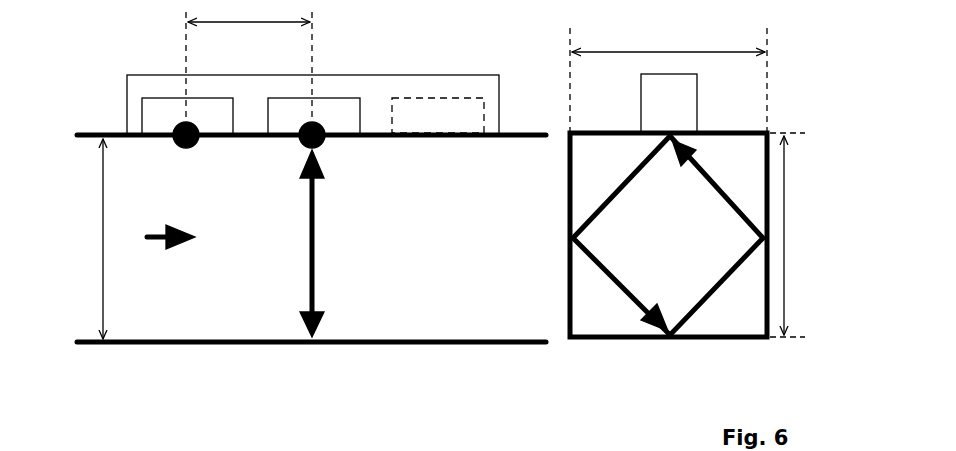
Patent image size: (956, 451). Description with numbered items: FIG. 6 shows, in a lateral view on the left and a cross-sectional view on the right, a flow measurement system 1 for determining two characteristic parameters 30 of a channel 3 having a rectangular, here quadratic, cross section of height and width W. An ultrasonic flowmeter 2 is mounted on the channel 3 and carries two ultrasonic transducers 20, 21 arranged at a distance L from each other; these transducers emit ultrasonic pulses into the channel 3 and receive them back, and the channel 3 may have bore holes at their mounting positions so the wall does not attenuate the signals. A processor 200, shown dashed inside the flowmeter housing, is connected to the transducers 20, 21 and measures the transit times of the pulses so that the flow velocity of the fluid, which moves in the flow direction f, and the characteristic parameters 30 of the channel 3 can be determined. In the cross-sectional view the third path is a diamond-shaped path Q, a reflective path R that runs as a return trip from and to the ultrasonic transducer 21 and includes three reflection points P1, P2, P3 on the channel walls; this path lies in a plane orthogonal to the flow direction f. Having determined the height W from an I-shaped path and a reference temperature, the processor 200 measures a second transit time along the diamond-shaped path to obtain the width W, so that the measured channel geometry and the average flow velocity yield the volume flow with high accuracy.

The flow measurement system 1 is at (88, 57).
The ultrasonic flowmeter 2 is at (127, 104).
The channel 3 is at (202, 346).
The ultrasonic transducer 20 is at (155, 98).
The ultrasonic transducer 21 is at (296, 98).
The processor 200 is at (437, 95).
The characteristic parameter 30 is at (103, 238).
The distance L is at (249, 11).
The flow direction f is at (152, 233).
The reflective path R is at (316, 241).
The reflection point P1 is at (570, 238).
The reflection point P2 is at (311, 345).
The reflection point P3 is at (762, 238).